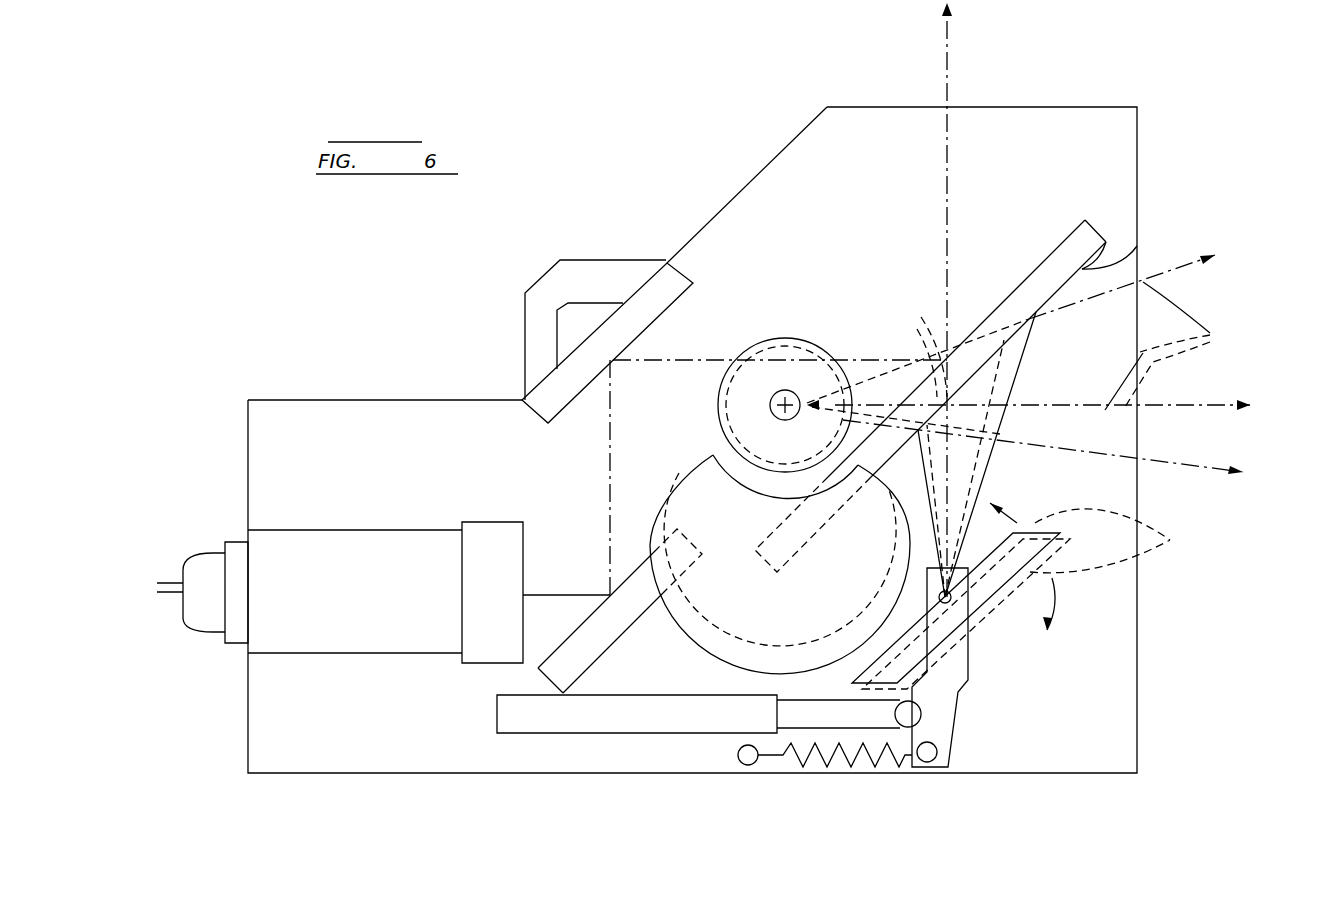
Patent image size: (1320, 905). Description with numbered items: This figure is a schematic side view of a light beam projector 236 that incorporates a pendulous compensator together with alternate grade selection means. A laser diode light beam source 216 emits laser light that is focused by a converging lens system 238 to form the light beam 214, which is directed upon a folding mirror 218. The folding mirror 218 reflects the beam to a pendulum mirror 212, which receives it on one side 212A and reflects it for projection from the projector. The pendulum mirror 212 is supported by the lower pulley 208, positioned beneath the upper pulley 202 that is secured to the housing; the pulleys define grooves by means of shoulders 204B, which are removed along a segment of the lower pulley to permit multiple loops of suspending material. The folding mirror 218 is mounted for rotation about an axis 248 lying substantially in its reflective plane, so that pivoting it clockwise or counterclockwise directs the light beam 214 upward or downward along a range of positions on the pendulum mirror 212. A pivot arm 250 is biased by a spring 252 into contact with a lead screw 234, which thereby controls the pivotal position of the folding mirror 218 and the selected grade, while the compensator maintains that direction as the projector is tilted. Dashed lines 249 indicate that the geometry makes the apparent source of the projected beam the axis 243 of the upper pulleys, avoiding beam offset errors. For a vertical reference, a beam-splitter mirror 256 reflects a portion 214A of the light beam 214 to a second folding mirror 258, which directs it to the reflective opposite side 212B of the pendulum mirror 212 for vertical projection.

The first upper pulley 202 is at (750, 372).
The shoulders 204B is at (665, 490).
The first lower pulley 208 is at (713, 655).
The pendulum mirror 212 is at (1100, 237).
The one side of the pendulum mirror 212A is at (1137, 246).
The opposite side of the pendulum mirror 212B is at (1072, 232).
The light beam 214 is at (1212, 336).
The portion of the light beam 214A is at (950, 53).
The laser diode light beam source 216 is at (188, 622).
The folding mirror 218 is at (1170, 540).
The lead screw 234 is at (607, 733).
The light beam projector 236 is at (485, 337).
The converging lens system 238 is at (483, 663).
The axis of the upper pulleys 243 is at (770, 405).
The axis 248 is at (948, 605).
The dashed lines 249 is at (935, 335).
The pivot arm 250 is at (957, 725).
The spring 252 is at (818, 768).
The beam-splitter mirror 256 is at (563, 667).
The folding mirror 258 is at (683, 262).